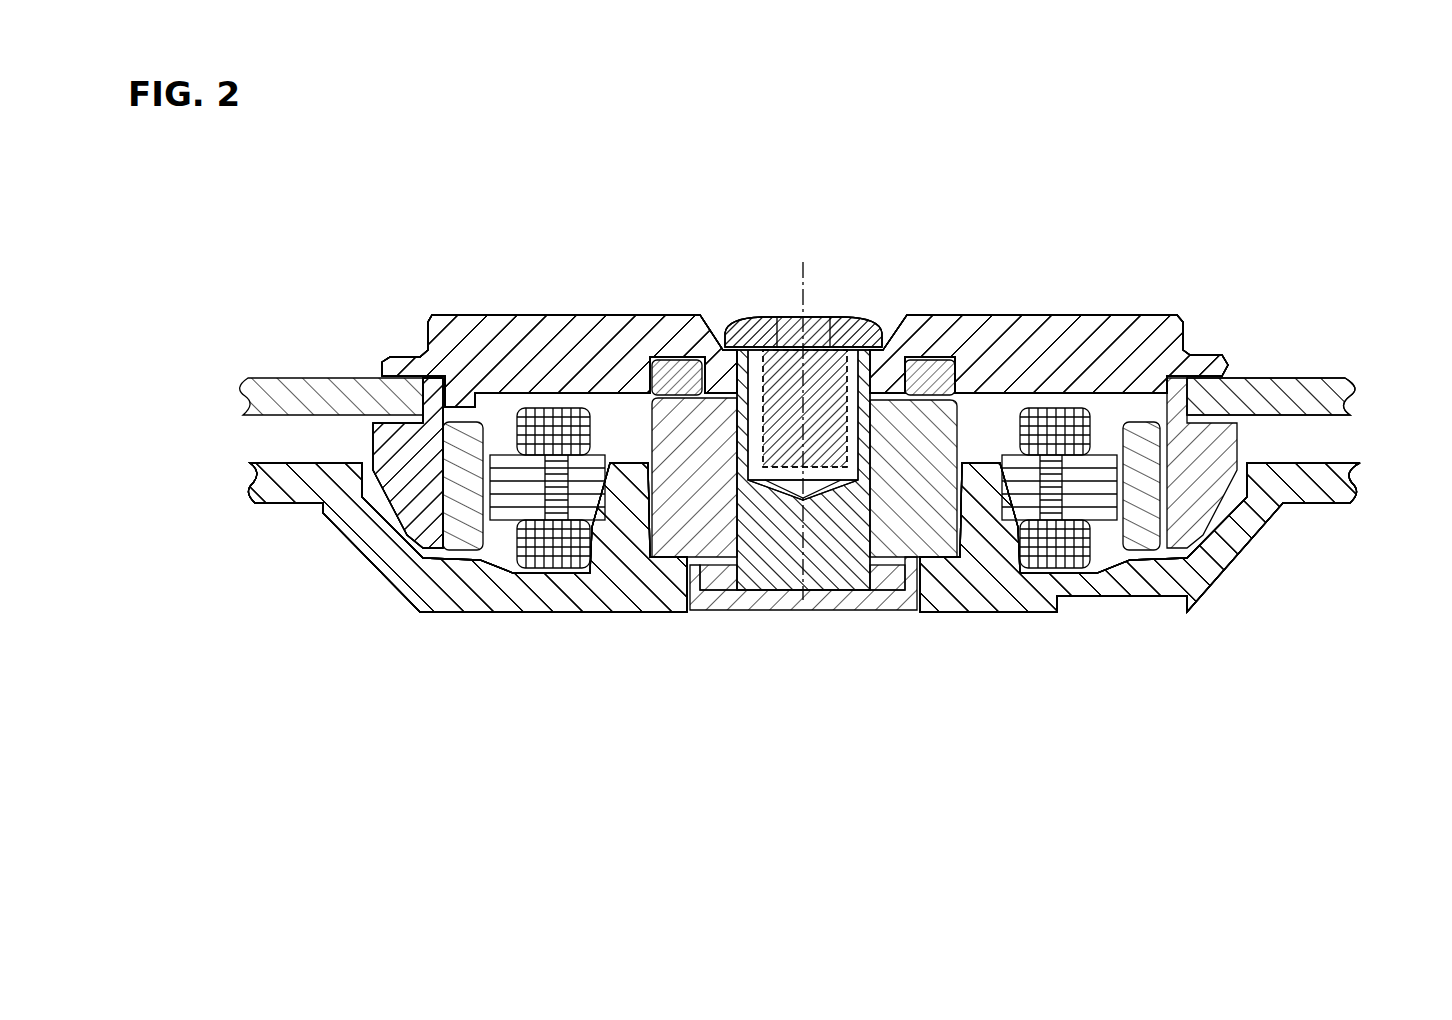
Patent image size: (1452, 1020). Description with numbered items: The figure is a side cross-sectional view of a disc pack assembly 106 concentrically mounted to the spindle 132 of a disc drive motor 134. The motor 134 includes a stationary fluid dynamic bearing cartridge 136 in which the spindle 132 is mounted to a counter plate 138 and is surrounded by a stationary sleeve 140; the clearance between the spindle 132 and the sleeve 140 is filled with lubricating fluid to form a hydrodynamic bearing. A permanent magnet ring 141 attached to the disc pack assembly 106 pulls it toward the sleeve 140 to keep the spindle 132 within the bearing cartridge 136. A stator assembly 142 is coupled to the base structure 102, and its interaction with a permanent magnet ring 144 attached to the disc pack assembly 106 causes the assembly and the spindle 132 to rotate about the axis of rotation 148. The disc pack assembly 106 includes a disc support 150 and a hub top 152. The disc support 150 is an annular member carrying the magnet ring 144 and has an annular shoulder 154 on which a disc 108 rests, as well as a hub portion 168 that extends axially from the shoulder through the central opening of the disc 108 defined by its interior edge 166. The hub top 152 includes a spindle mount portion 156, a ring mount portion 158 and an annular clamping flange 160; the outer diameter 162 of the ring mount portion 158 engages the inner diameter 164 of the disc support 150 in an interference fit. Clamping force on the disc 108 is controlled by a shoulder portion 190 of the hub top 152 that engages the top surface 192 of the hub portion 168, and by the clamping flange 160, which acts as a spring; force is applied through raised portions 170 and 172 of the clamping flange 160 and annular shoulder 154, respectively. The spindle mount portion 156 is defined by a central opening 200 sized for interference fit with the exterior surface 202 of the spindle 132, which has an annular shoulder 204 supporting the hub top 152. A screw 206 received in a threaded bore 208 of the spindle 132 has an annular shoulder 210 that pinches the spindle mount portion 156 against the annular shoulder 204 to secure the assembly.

The base structure 102 is at (422, 583).
The disc pack assembly 106 is at (408, 278).
The disc 108 is at (1345, 383).
The spindle 132 is at (837, 573).
The disc drive motor 134 is at (537, 578).
The fluid dynamic bearing cartridge 136 is at (647, 570).
The counter plate 138 is at (747, 587).
The sleeve 140 is at (900, 548).
The permanent magnet ring 141 is at (957, 368).
The stator assembly 142 is at (1080, 548).
The permanent magnet ring 144 is at (1137, 530).
The axis of rotation 148 is at (807, 270).
The disc support 150 is at (1205, 498).
The hub top 152 is at (1122, 320).
The annular shoulder 154 is at (406, 424).
The spindle mount portion 156 is at (880, 353).
The ring mount portion 158 is at (387, 435).
The clamping flange 160 is at (1215, 362).
The outer diameter 162 is at (447, 385).
The inner diameter 164 is at (445, 402).
The interior edge 166 is at (445, 398).
The hub portion 168 is at (450, 392).
The raised portion 170 is at (1222, 375).
The raised portion 172 is at (1217, 422).
The shoulder portion 190 is at (432, 373).
The top surface 192 is at (437, 362).
The central opening 200 is at (930, 358).
The exterior surface 202 is at (740, 368).
The annular shoulder 204 is at (867, 398).
The screw 206 is at (850, 332).
The threaded bore 208 is at (787, 478).
The annular shoulder 210 is at (755, 330).